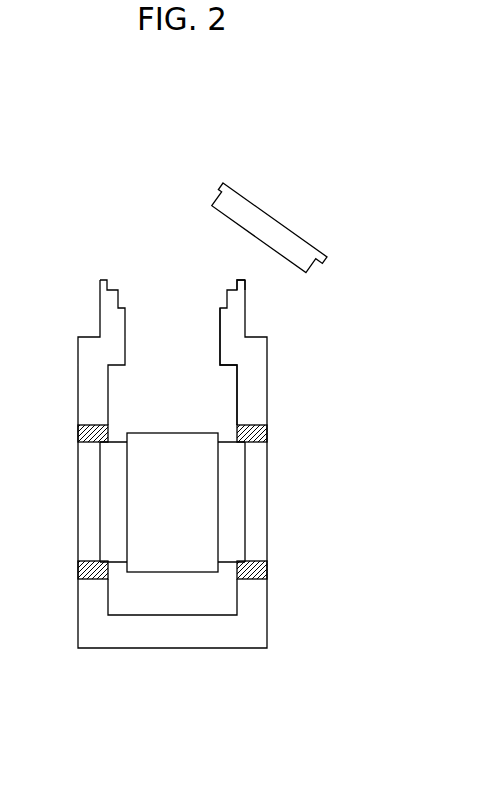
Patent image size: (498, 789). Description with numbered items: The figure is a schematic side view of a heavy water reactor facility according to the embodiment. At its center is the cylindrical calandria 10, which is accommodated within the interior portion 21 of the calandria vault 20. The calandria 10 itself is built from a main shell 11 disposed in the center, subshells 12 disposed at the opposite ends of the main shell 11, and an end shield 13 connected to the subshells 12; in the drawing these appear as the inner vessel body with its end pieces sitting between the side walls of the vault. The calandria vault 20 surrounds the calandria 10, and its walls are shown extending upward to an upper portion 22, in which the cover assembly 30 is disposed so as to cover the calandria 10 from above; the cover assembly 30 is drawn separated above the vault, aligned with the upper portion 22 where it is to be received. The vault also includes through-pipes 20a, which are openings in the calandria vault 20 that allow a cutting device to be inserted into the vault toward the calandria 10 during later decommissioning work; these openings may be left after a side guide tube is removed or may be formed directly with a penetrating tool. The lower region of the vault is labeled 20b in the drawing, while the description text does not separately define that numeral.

The calandria 10 is at (170, 580).
The main shell 11 is at (148, 574).
The subshells 12 is at (122, 574).
The end shield 13 is at (80, 548).
The calandria vault 20 is at (218, 460).
The through-pipes 20a is at (202, 349).
The bottom of housing 20b is at (201, 536).
The interior portion 21 is at (218, 392).
The upper portion 22 is at (245, 284).
The cover assembly 30 is at (267, 218).